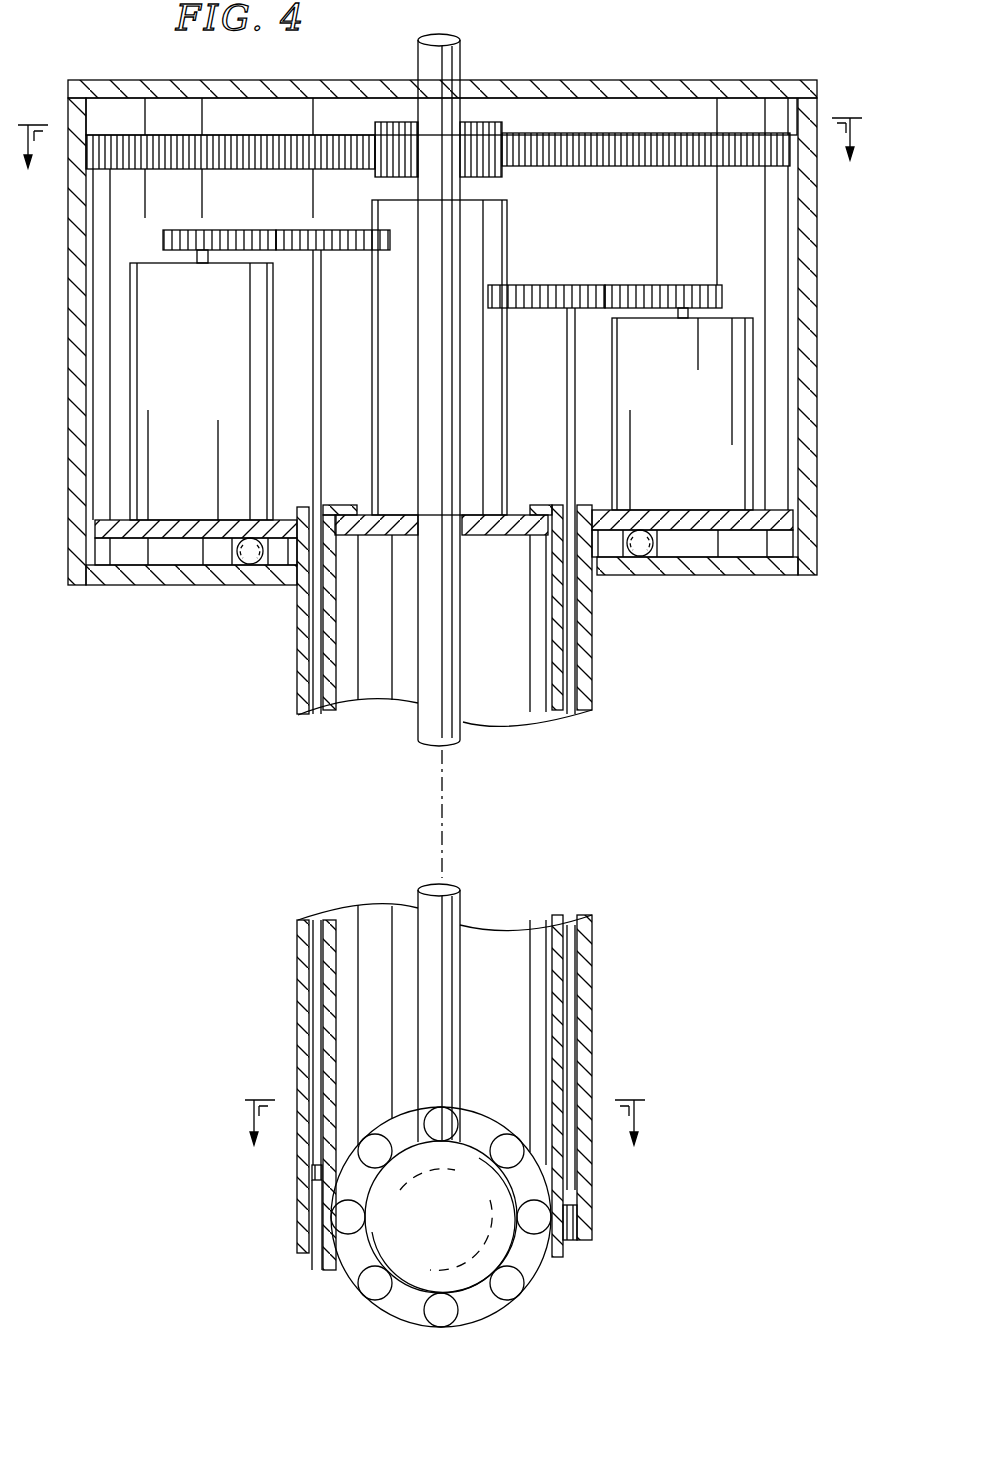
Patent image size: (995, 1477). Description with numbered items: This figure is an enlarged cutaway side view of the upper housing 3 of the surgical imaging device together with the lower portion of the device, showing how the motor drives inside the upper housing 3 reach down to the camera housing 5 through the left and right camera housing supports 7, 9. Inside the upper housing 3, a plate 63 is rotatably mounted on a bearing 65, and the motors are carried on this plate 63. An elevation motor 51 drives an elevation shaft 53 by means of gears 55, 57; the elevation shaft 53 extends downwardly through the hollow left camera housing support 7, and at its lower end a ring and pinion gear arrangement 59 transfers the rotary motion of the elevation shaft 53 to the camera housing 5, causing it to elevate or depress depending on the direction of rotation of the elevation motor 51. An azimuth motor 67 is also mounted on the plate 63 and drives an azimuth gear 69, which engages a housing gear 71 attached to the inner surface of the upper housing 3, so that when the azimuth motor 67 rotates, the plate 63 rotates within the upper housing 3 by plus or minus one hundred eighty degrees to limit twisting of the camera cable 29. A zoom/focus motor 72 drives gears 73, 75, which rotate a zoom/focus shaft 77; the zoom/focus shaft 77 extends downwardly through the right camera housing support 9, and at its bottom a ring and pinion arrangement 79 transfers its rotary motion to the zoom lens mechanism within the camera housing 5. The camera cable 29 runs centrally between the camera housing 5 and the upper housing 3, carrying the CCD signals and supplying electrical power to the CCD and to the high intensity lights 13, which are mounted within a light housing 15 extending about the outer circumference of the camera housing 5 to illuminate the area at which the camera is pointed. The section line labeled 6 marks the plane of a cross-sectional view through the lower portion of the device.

The upper housing 3 is at (649, 38).
The camera housing 5 is at (400, 1325).
The section line 6- 6 is at (445, 1139).
The left camera housing support 7 is at (297, 676).
The right camera housing support 9 is at (592, 662).
The high intensity lights 13 is at (450, 1312).
The light housing 15 is at (540, 1268).
The camera cable 29 is at (460, 54).
The elevation motor 51 is at (187, 398).
The elevation shaft 53 is at (322, 420).
The gear 55 is at (186, 229).
The gear 57 is at (291, 229).
The ring and pinion gear arrangement 59 is at (294, 1172).
The plate 63 is at (700, 510).
The bearing 65 is at (252, 564).
The azimuth motor 67 is at (510, 236).
The azimuth gear 69 is at (505, 129).
The housing gear 71 is at (657, 168).
The zoom/focus motor 72 is at (667, 426).
The gear 73 is at (609, 284).
The gear 75 is at (684, 284).
The zoom/focus shaft 77 is at (566, 408).
The ring and pinion arrangement 79 is at (584, 1250).